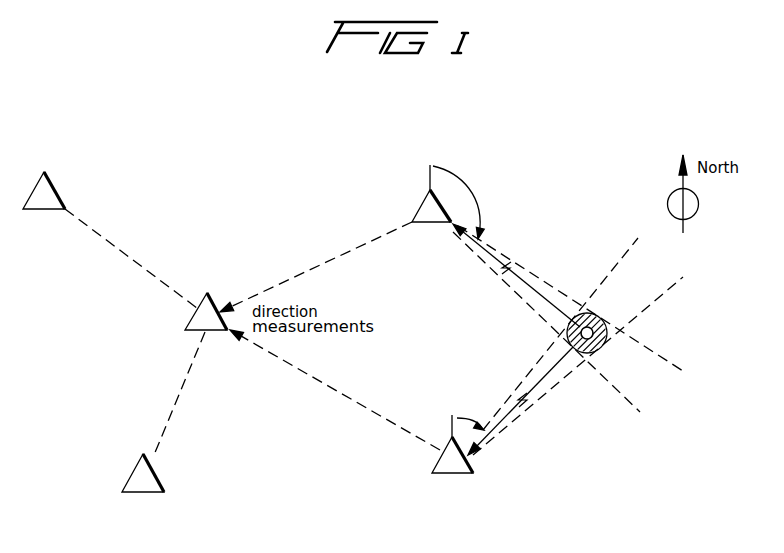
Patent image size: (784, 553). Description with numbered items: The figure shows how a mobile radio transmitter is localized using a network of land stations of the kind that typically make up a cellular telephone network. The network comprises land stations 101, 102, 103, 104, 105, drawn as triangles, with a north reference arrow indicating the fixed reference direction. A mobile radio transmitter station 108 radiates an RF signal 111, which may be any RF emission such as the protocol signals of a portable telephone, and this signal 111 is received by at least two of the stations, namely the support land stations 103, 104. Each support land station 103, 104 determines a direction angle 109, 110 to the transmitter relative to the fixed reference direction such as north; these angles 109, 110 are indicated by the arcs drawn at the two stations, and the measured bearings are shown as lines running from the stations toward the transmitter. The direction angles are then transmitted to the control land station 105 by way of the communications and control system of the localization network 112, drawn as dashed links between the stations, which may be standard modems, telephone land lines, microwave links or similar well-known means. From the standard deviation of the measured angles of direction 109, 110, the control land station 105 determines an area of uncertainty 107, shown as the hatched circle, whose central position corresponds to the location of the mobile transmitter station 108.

The land station 101 is at (148, 492).
The land station 102 is at (56, 193).
The support land station 103 is at (445, 475).
The support land station 104 is at (419, 210).
The control land station 105 is at (192, 318).
The area of uncertainty 107 is at (598, 313).
The mobile radio transmitter station 108 is at (593, 339).
The direction angle 109 is at (470, 418).
The direction angle 110 is at (467, 190).
The RF signal 111 is at (537, 292).
The communications and control system of the localization network 112 is at (115, 247).